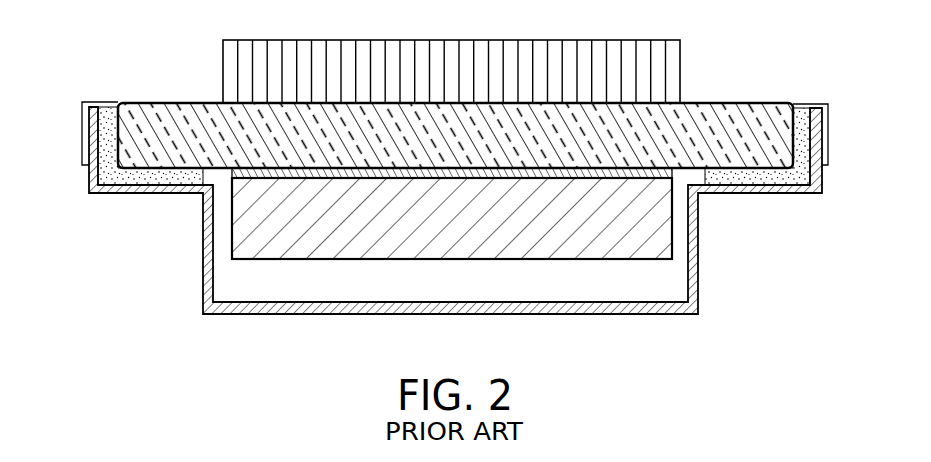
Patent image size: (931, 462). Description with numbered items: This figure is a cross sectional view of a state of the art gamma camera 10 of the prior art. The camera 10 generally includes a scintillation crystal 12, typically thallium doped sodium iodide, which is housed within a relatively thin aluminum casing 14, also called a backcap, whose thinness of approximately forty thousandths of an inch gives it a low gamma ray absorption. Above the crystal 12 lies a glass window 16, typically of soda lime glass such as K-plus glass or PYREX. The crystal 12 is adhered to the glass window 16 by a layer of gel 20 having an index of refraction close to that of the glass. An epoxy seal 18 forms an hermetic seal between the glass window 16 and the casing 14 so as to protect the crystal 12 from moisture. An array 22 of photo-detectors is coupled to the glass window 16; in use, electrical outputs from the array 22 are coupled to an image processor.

The camera 10 is at (158, 237).
The scintillation crystal 12 is at (368, 259).
The aluminum casing 14 is at (670, 314).
The glass window 16 is at (163, 102).
The epoxy seal 18 is at (100, 164).
The layer of gel 20 is at (672, 173).
The array of photo-detectors 22 is at (680, 67).